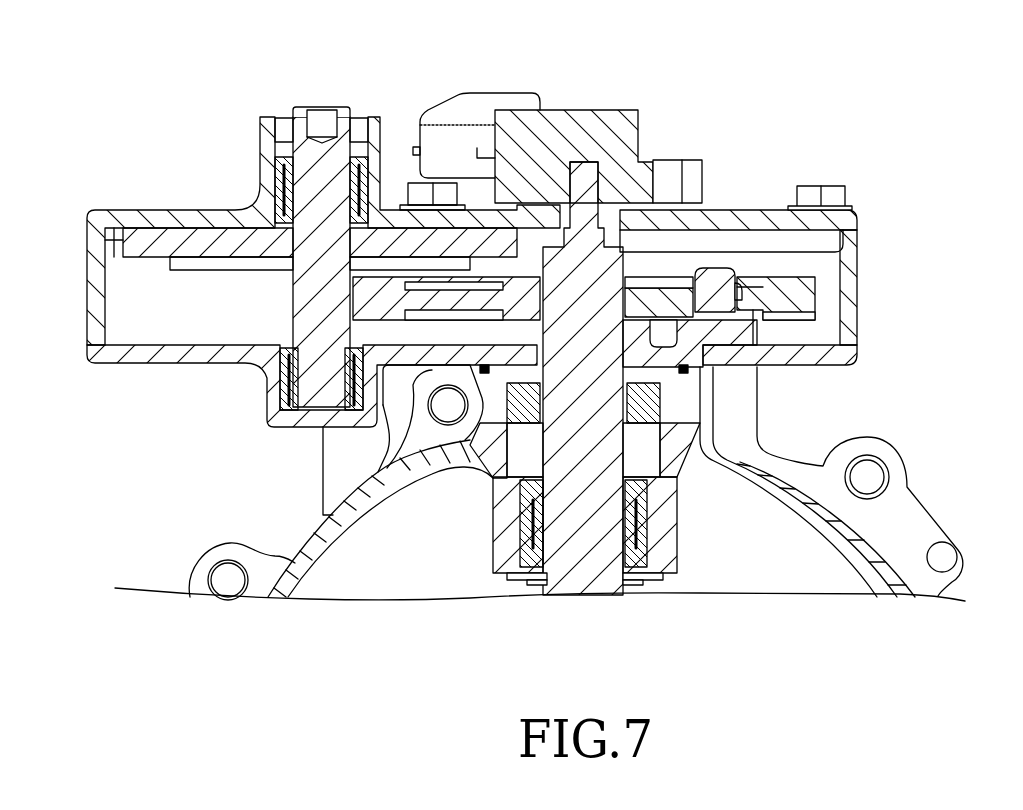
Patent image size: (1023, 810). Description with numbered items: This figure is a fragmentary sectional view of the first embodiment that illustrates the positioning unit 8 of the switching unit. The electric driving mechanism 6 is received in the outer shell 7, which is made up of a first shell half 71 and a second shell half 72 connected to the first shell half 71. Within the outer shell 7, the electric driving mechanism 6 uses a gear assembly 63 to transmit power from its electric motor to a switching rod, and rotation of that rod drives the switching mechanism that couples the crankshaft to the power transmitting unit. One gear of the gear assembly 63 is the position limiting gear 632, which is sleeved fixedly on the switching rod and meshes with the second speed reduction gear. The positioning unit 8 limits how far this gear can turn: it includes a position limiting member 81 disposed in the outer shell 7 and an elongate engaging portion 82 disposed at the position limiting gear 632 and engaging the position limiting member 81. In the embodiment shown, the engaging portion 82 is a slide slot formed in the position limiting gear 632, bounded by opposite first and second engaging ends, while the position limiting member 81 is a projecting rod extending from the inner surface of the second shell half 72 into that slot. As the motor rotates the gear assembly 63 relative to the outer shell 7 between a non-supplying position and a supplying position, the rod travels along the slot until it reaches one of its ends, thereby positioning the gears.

The electric driving mechanism 6 is at (653, 95).
The outer shell 7 is at (900, 268).
The first shell half 71 is at (858, 232).
The second shell half 72 is at (857, 343).
The positioning unit 8 is at (712, 276).
The position limiting member 81 is at (719, 235).
The engaging portion 82 is at (736, 283).
The gear assembly 63 is at (797, 358).
The position limiting gear 632 is at (808, 323).